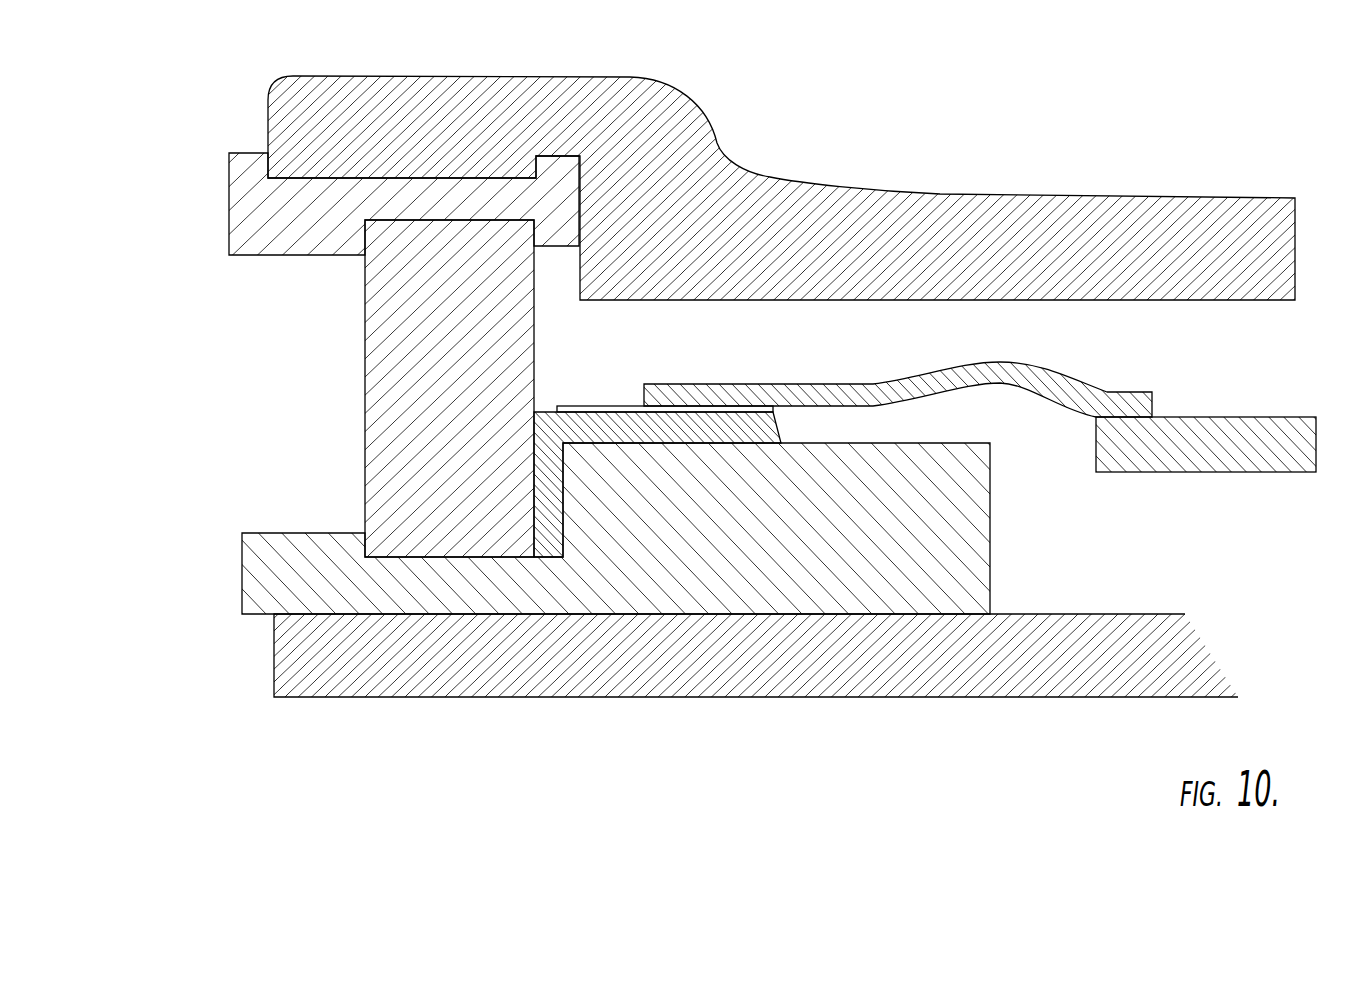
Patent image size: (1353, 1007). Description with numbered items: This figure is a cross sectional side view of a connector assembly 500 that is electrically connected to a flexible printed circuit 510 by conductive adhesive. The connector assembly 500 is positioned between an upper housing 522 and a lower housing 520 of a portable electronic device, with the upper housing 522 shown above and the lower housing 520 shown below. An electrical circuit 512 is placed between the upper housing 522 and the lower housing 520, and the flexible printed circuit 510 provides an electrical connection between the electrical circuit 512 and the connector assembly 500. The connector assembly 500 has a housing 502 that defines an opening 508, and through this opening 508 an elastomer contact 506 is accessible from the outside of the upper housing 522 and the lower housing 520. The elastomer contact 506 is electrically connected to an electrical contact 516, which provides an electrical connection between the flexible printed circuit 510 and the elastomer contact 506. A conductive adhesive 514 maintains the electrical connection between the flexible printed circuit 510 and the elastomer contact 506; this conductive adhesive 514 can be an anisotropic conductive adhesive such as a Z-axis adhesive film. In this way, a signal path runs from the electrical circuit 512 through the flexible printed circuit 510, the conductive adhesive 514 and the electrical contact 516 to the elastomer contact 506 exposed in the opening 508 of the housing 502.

The connector assembly 500 is at (220, 573).
The housing 502 is at (238, 200).
The elastomer contact 506 is at (410, 428).
The opening 508 is at (220, 258).
The flexible printed circuit 510 is at (937, 368).
The electrical circuit 512 is at (1165, 473).
The conductive adhesive 514 is at (617, 406).
The electrical contact 516 is at (648, 443).
The lower housing 520 is at (848, 698).
The upper housing 522 is at (892, 185).